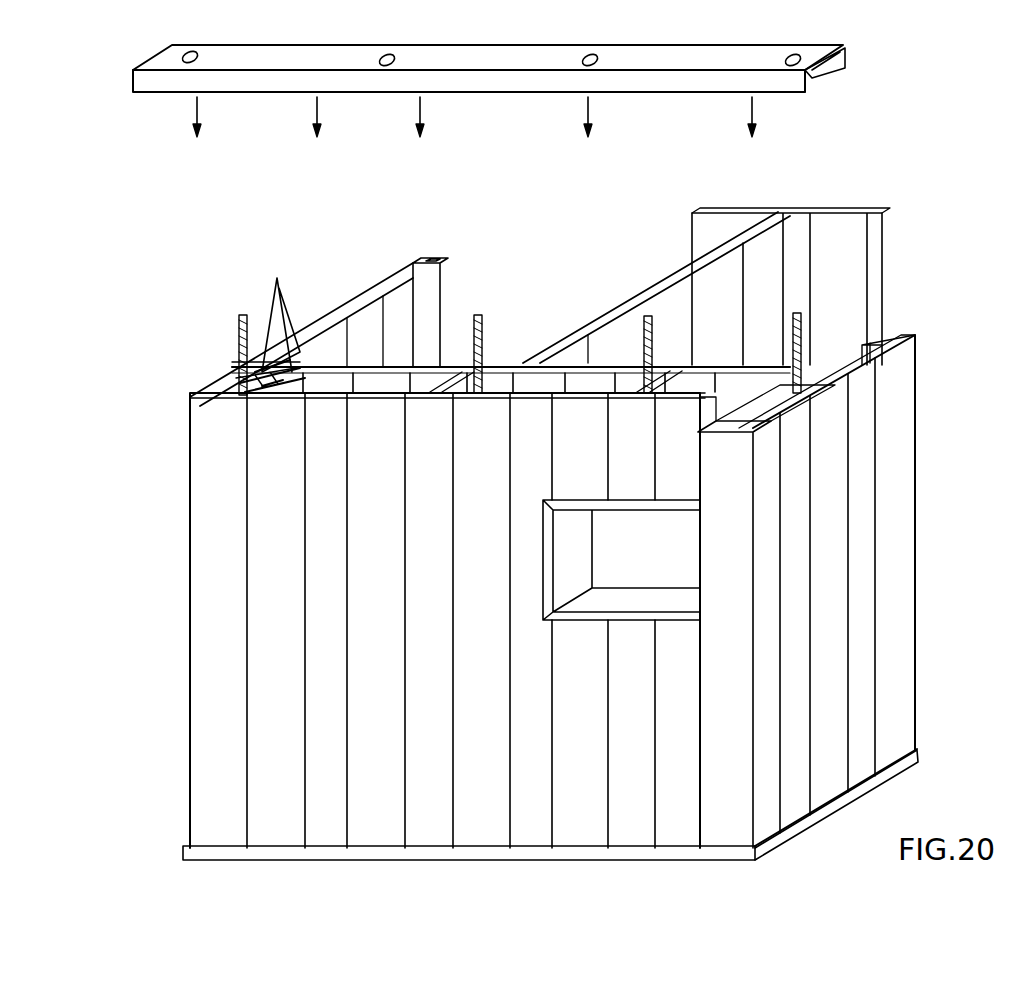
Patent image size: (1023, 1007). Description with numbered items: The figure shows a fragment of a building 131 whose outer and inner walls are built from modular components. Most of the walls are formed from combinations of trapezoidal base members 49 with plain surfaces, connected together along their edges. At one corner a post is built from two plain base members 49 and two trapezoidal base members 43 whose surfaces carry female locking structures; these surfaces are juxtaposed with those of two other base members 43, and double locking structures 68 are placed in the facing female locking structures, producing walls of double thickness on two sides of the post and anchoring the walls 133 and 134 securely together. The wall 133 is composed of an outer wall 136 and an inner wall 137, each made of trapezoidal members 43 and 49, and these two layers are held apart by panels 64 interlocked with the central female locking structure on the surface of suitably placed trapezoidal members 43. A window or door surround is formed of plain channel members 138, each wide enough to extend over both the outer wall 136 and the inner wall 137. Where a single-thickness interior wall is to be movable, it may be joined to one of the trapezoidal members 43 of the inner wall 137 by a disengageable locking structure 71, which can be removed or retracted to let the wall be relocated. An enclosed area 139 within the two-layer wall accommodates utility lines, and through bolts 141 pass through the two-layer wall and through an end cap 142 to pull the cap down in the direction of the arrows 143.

The building 131 is at (917, 460).
The wall 133 is at (392, 363).
The wall 134 is at (347, 309).
The outer wall 136 is at (412, 387).
The inner wall 137 is at (500, 364).
The plain channel members 138 is at (577, 500).
The enclosed area 139 is at (878, 345).
The through bolts 141 is at (240, 332).
The end cap 142 is at (850, 57).
The arrows 143 is at (745, 118).
The trapezoidal base members 43 is at (272, 322).
The plain base members 49 is at (395, 395).
The panels 64 is at (648, 376).
The double locking structures 68 is at (255, 394).
The disengageable locking structure 71 is at (522, 365).